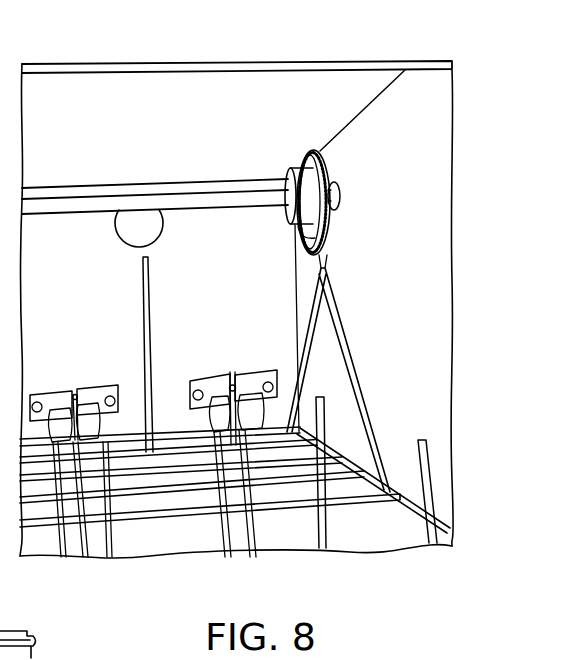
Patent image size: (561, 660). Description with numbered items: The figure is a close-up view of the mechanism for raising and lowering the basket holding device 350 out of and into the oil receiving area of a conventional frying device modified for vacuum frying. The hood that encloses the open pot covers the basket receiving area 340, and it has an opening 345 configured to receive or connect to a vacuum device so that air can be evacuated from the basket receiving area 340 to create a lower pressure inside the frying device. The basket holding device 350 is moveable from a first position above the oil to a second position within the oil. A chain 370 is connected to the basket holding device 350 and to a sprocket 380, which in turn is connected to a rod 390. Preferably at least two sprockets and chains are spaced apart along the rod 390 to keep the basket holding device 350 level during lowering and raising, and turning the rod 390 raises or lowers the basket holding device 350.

The basket receiving area 340 is at (205, 314).
The opening 345 is at (125, 229).
The basket holding device 350 is at (362, 395).
The chain 370 is at (332, 243).
The sprocket 380 is at (297, 232).
The rod 390 is at (227, 200).